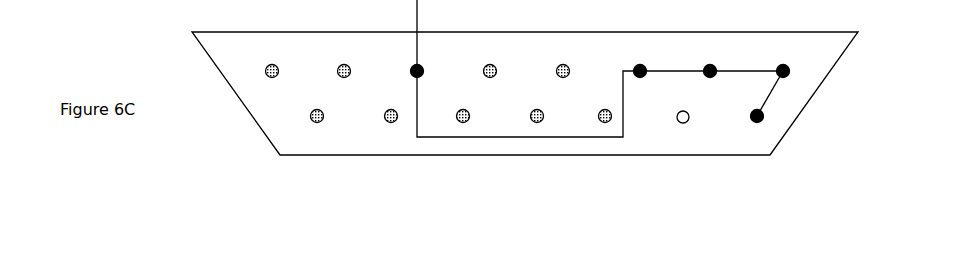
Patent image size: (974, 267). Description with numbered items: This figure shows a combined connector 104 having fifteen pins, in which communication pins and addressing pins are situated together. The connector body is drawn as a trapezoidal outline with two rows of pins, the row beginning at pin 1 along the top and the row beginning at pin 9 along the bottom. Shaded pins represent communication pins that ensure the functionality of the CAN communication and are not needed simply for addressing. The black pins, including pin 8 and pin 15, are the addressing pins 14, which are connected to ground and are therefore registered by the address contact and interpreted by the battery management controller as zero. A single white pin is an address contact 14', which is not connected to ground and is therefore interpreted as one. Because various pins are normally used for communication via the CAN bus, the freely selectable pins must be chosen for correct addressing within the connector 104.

The first row of electrode pads 1 is at (405, 63).
The pin 9 is at (456, 129).
The pin 8 is at (790, 59).
The addressing pin 14 is at (663, 68).
The address contact 14' is at (668, 157).
The pin 15 is at (767, 108).
The combined connector 104 is at (773, 155).